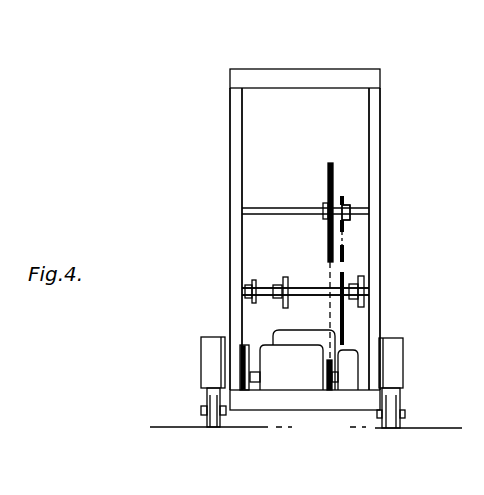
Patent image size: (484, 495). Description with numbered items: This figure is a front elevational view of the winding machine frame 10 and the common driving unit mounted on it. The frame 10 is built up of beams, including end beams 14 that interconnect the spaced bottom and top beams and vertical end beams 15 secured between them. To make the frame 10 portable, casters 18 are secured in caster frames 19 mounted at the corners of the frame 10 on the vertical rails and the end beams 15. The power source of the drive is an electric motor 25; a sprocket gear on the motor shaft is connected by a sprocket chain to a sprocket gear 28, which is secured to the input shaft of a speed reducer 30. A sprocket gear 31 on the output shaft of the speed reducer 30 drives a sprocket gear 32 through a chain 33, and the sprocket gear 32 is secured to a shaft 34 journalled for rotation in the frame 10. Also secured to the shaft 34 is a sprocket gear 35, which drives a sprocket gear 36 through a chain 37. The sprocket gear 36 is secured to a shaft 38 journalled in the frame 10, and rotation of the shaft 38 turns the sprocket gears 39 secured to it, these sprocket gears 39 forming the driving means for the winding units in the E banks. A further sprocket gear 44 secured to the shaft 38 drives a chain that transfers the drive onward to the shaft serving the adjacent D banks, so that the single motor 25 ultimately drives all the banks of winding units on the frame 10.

The frame 10 is at (314, 68).
The end beams 14 is at (262, 74).
The vertical end beams 15 is at (232, 160).
The casters 18 is at (208, 400).
The caster frames 19 is at (210, 357).
The electric motor 25 is at (350, 353).
The sprocket gear 28 is at (244, 345).
The speed reducer 30 is at (292, 360).
The sprocket gear 31 is at (330, 398).
The sprocket gear 32 is at (328, 176).
The chain 33 is at (330, 302).
The shaft 34 is at (280, 208).
The sprocket gear 35 is at (350, 203).
The sprocket gear 36 is at (344, 263).
The chain 37 is at (343, 233).
The shaft 38 is at (300, 288).
The sprocket gears 39 is at (252, 280).
The sprocket gear 44 is at (285, 277).